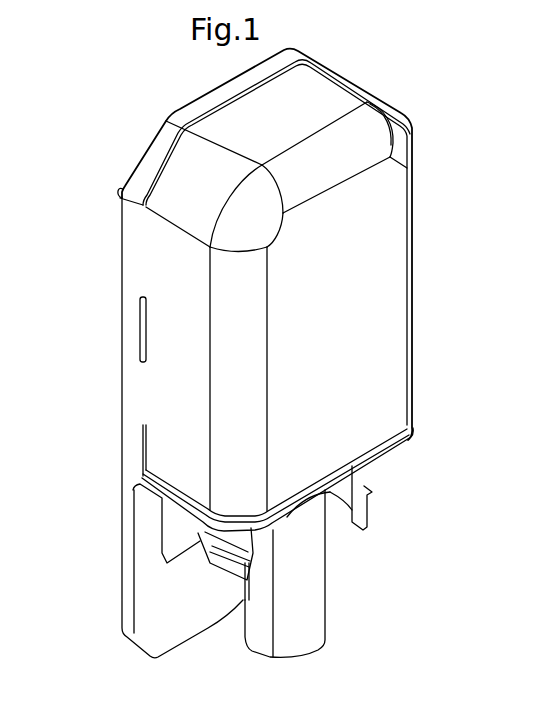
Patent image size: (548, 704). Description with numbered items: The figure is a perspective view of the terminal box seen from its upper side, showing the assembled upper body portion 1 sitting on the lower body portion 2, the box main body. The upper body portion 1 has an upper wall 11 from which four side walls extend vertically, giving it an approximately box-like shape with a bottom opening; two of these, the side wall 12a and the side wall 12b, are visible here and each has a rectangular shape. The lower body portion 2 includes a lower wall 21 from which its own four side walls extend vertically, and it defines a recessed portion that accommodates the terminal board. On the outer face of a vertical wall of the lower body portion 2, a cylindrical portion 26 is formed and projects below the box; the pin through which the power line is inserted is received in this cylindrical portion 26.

The upper body portion 1 is at (413, 121).
The lower body portion 2 is at (180, 635).
The upper wall 11 is at (390, 333).
The side wall 12a is at (322, 117).
The side wall 12b is at (153, 392).
The lower wall 21 is at (125, 328).
The cylindrical portion 26 is at (317, 583).